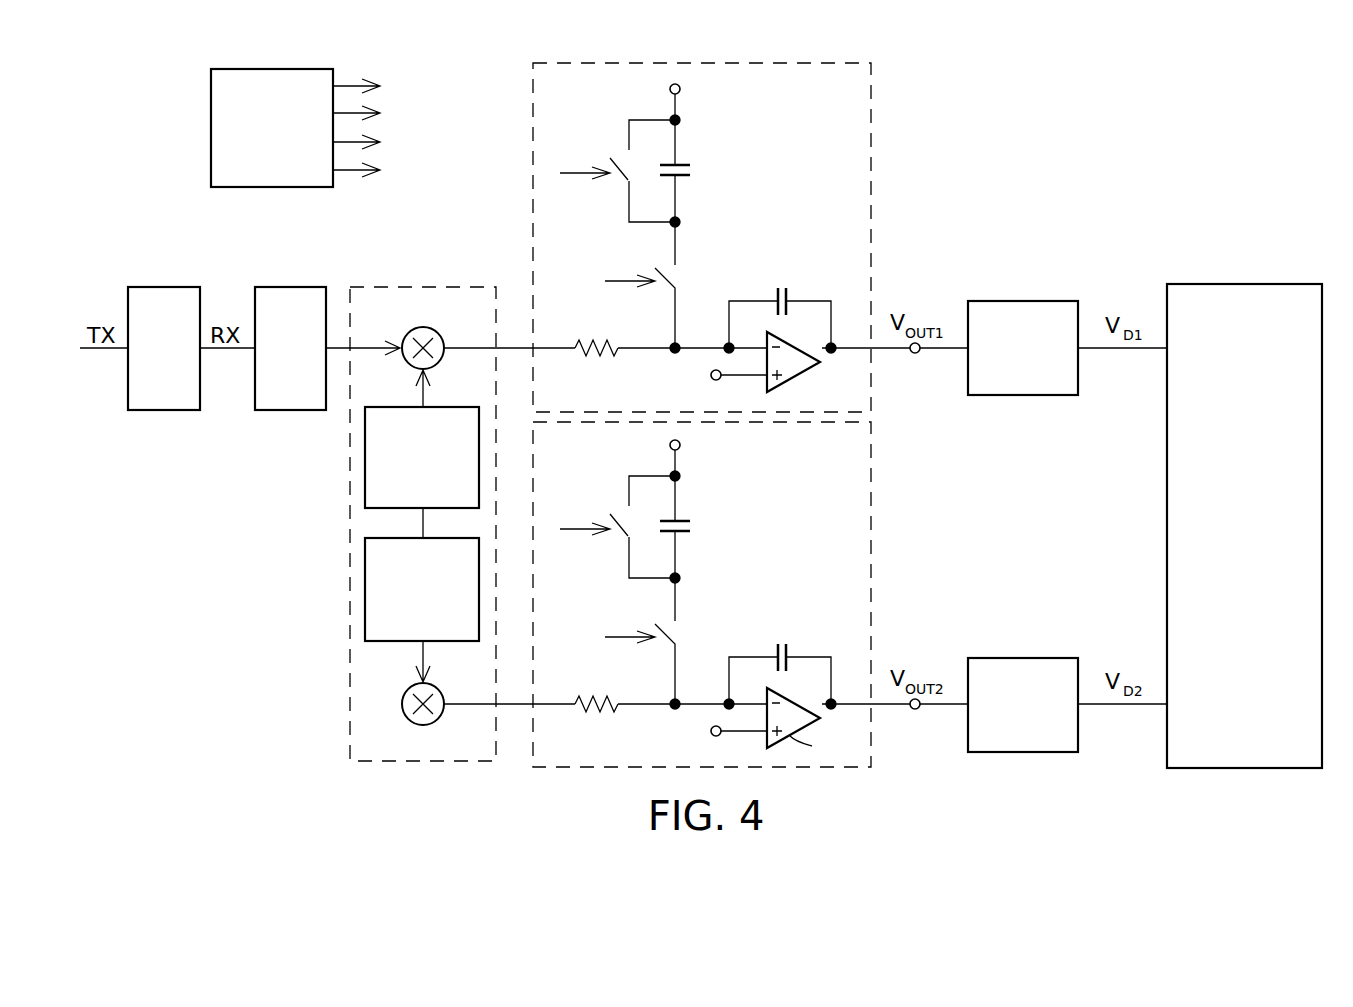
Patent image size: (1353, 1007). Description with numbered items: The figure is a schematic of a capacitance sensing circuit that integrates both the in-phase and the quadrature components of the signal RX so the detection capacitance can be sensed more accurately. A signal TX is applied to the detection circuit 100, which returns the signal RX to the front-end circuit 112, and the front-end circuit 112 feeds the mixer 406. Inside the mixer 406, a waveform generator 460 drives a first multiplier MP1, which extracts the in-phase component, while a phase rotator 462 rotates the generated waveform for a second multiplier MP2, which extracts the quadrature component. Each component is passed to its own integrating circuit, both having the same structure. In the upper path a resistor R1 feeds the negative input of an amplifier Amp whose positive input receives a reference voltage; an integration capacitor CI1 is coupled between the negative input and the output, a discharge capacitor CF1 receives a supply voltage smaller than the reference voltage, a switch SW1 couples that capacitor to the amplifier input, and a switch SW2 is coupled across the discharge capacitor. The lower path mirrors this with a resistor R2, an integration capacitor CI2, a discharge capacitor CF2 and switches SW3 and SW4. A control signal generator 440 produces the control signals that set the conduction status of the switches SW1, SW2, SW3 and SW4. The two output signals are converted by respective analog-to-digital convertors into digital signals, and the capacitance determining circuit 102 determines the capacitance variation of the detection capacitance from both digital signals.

The control signal generator 440 is at (272, 69).
The detection circuit 100 is at (162, 287).
The front-end circuit 112 is at (288, 287).
The mixer 406 is at (462, 497).
The waveform generator 460 is at (365, 473).
The phase rotator 462 is at (365, 598).
The capacitance determining circuit 102 is at (1241, 284).
The multiplier MP1 is at (440, 335).
The multiplier MP2 is at (405, 719).
The switch SW1 is at (691, 303).
The switch SW2 is at (618, 147).
The switch SW3 is at (691, 659).
The switch SW4 is at (625, 511).
The resistor R1 is at (596, 333).
The resistor R2 is at (596, 689).
The discharge capacitor CF1 is at (694, 174).
The discharge capacitor CF2 is at (694, 530).
The integration capacitor CI1 is at (780, 300).
The integration capacitor CI2 is at (780, 656).
The amplifier Amp is at (790, 380).